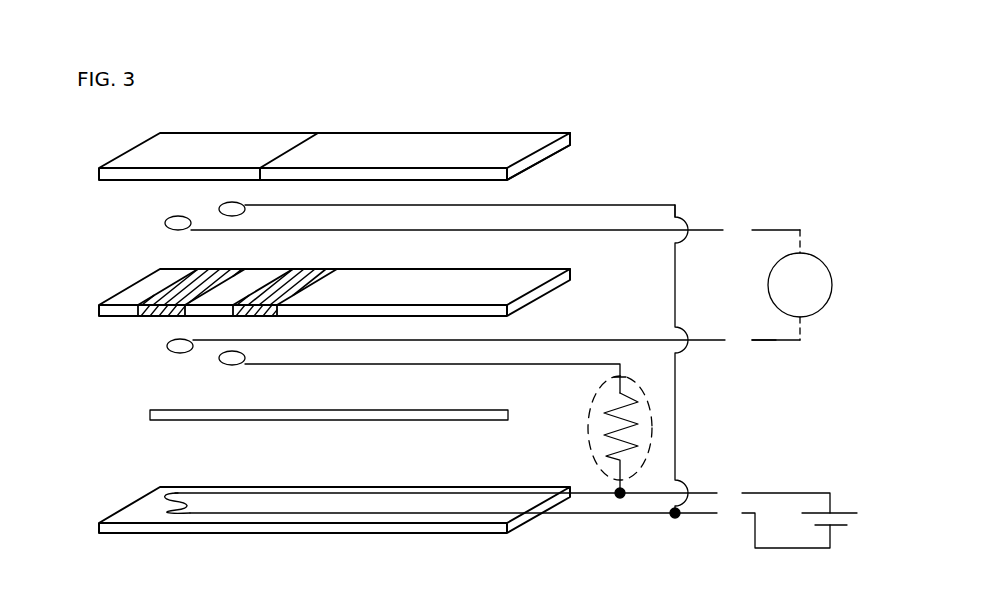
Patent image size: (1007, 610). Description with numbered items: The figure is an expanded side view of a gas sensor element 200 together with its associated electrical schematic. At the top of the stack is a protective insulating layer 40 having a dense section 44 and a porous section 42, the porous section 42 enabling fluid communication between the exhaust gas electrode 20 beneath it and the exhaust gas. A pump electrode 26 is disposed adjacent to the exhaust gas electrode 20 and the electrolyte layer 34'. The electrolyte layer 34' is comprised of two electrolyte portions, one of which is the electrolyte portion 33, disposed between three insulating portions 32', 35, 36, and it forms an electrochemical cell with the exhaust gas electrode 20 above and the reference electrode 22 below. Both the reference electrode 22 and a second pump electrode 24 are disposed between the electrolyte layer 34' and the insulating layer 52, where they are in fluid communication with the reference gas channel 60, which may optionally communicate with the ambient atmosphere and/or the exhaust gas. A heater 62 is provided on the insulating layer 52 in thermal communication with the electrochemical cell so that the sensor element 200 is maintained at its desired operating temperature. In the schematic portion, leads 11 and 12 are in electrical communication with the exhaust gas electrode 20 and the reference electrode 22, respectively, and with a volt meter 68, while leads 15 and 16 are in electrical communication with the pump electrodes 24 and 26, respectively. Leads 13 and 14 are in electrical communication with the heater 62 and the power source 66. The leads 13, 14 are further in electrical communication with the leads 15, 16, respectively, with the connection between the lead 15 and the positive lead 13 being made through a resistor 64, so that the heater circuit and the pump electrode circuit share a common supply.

The sensor element 200 is at (711, 137).
The protective insulating layer 40 is at (130, 152).
The porous section 42 is at (196, 133).
The dense section 44 is at (395, 133).
The pump electrode 26 is at (219, 207).
The exhaust gas electrode 20 is at (165, 222).
The lead 16 is at (672, 203).
The lead 11 is at (715, 228).
The volt meter 68 is at (824, 262).
The electrolyte layer 34' is at (317, 292).
The insulating portion 36 is at (178, 270).
The insulating portion 35 is at (290, 270).
The electrolyte portion 33 is at (348, 270).
The insulating portion 32' is at (485, 256).
The reference electrode 22 is at (166, 344).
The pump electrode 24 is at (218, 361).
The lead 12 is at (708, 338).
The lead 15 is at (622, 377).
The resistor 64 is at (591, 405).
The reference gas channel 60 is at (150, 414).
The positive lead 13 is at (707, 492).
The power source 66 is at (838, 511).
The insulating layer 52 is at (128, 515).
The heater 62 is at (193, 517).
The lead 14 is at (707, 515).